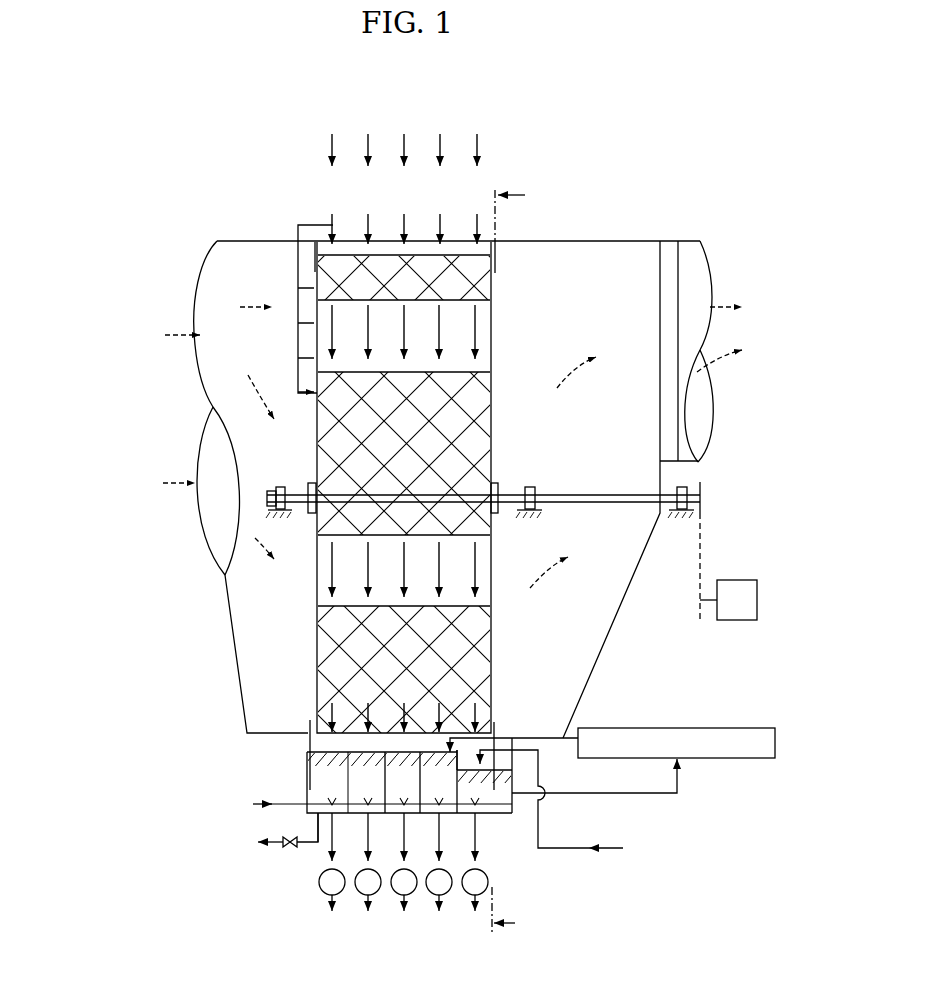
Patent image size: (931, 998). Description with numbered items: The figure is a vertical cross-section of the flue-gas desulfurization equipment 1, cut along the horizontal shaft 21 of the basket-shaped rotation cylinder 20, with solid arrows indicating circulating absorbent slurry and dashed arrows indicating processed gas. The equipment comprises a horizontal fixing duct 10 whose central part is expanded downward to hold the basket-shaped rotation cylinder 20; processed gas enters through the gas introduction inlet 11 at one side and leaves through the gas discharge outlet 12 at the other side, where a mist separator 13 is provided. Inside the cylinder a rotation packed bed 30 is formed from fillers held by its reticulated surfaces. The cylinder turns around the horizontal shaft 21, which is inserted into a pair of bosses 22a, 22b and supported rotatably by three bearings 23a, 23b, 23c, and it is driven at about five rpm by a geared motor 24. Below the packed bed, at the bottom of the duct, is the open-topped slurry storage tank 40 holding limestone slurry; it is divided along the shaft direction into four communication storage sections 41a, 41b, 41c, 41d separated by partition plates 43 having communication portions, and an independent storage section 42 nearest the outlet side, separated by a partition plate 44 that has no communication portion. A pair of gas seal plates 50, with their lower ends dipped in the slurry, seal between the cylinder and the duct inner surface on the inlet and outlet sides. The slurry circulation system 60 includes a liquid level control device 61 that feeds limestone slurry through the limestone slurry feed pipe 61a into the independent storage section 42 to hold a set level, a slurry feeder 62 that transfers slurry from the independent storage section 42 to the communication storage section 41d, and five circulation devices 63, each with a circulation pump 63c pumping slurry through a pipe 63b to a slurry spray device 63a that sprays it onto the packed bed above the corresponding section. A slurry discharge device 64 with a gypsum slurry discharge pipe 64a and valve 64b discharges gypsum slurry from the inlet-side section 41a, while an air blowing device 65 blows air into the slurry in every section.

The FGD equipment 1 is at (653, 172).
The fixing duct 10 is at (572, 239).
The gas introduction inlet 11 is at (212, 438).
The gas discharge outlet 12 is at (705, 416).
The mist separator 13 is at (668, 250).
The basket-shaped rotation cylinder 20 is at (497, 327).
The horizontal shaft 21 is at (606, 494).
The boss 22a is at (312, 483).
The boss 22b is at (496, 483).
The bearing 23a is at (280, 487).
The bearing 23b is at (530, 487).
The bearing 23c is at (684, 487).
The geared motor 24 is at (738, 580).
The rotation packed bed 30 is at (490, 408).
The slurry storage tank 40 is at (305, 768).
The communication storage section 41a is at (313, 795).
The communication storage section 41b is at (357, 810).
The communication storage section 41c is at (393, 810).
The communication storage section 41d is at (430, 810).
The independent storage section 42 is at (495, 810).
The partition plate 43 is at (350, 780).
The partition wall 44 is at (456, 778).
The gas seal plate 50 is at (315, 262).
The slurry circulation system 60 is at (685, 786).
The liquid level control device 61 is at (613, 854).
The limestone slurry feed pipe 61a is at (568, 846).
The slurry feeder 62 is at (706, 728).
The circulation device 63 is at (490, 880).
The slurry spray device 63a is at (329, 218).
The pipe 63b is at (329, 140).
The circulation pump 63c is at (362, 900).
The slurry discharge device 64 is at (303, 851).
The gypsum slurry discharge pipe 64a is at (310, 848).
The valve 64b is at (288, 848).
The air blowing device 65 is at (297, 805).